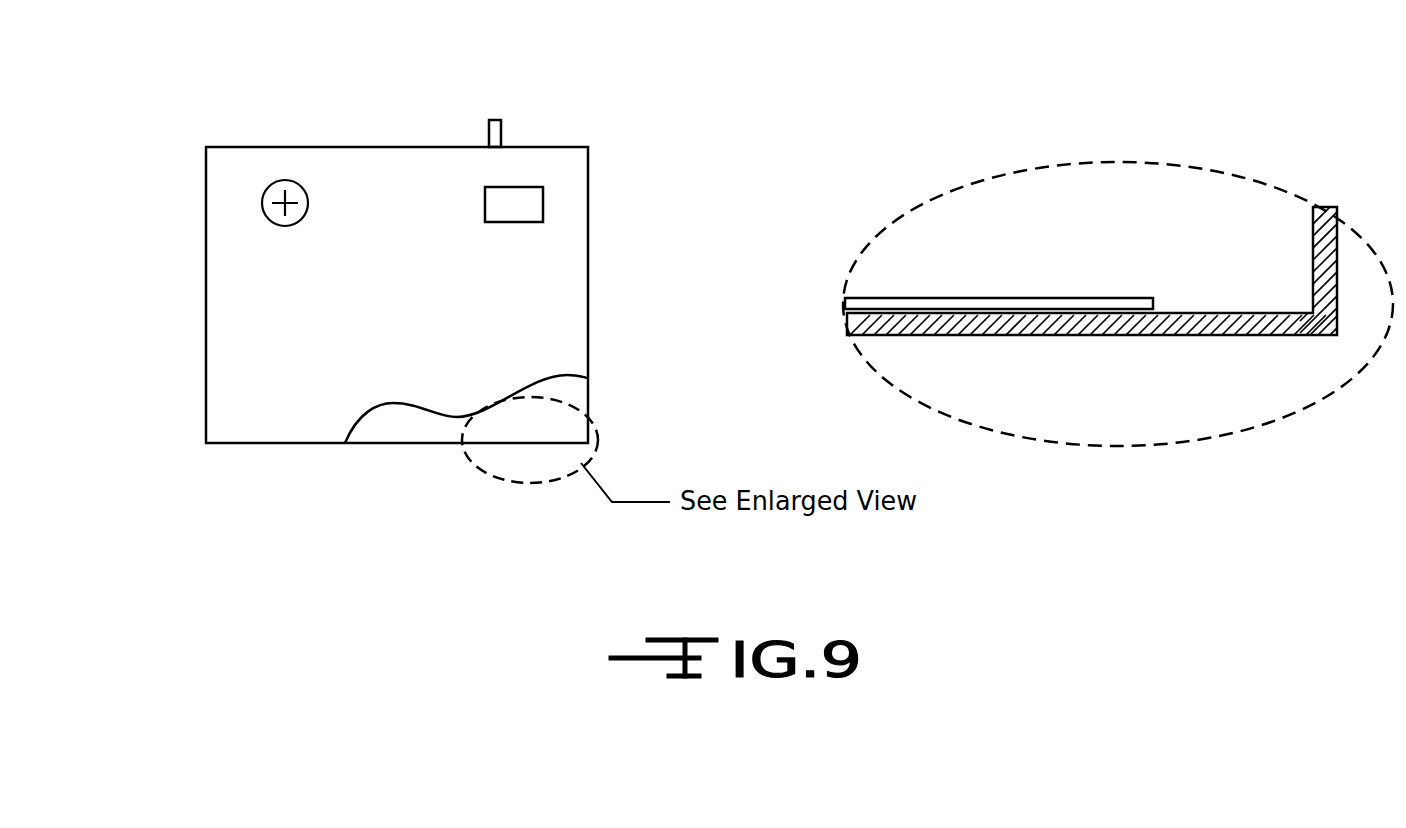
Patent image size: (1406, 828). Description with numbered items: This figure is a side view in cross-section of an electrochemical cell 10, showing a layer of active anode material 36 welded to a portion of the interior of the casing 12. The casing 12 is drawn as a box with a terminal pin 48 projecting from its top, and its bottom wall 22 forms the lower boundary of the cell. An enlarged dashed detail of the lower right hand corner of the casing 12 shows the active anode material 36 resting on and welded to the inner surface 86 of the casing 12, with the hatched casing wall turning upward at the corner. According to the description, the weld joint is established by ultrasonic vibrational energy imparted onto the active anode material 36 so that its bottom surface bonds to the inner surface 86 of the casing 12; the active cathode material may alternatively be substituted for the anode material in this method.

The electrochemical cell 10 is at (166, 195).
The terminal pin 48 is at (502, 132).
The bottom wall 22 is at (380, 445).
The active anode material 36 is at (1062, 298).
The inner surface 86 is at (1224, 303).
The casing 12 is at (1173, 327).